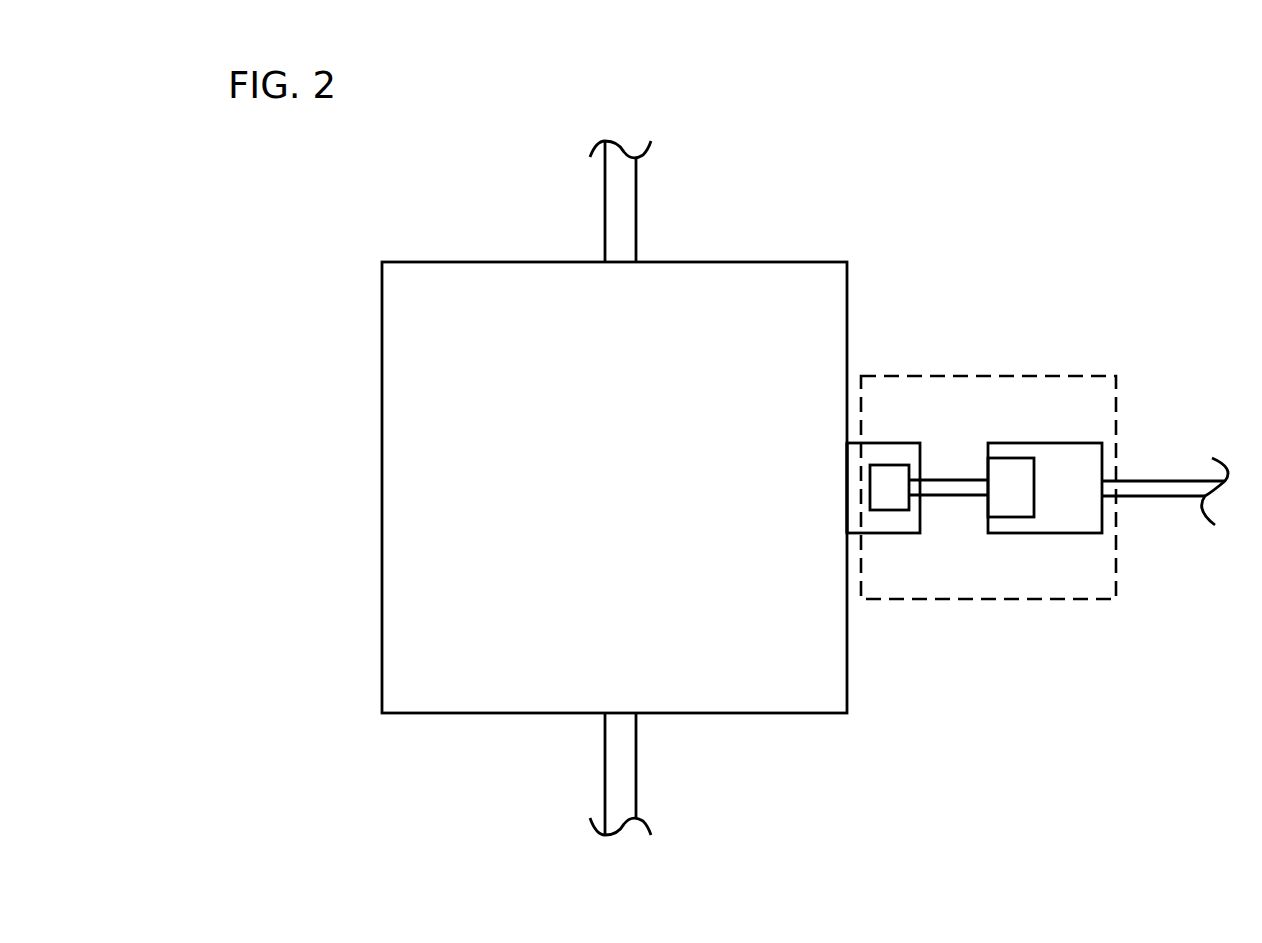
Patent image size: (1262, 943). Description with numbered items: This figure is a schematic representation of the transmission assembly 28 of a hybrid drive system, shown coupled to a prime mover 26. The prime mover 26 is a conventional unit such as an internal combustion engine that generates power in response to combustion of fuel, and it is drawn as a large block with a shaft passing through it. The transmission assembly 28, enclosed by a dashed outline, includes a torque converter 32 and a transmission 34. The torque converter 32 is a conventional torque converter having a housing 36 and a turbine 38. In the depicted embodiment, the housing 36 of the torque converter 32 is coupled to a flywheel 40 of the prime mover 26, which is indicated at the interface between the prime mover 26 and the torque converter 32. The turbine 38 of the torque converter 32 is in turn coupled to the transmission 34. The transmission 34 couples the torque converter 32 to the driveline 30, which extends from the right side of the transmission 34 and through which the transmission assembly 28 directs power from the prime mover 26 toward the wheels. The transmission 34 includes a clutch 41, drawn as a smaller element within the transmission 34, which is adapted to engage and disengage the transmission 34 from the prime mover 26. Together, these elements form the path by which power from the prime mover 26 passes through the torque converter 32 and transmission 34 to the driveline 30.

The prime mover 26 is at (620, 433).
The transmission assembly 28 is at (1037, 372).
The driveline 30 is at (1165, 470).
The torque converter 32 is at (899, 441).
The transmission 34 is at (1043, 440).
The housing 36 is at (893, 533).
The turbine 38 is at (892, 513).
The flywheel 40 is at (850, 537).
The clutch 41 is at (1023, 518).